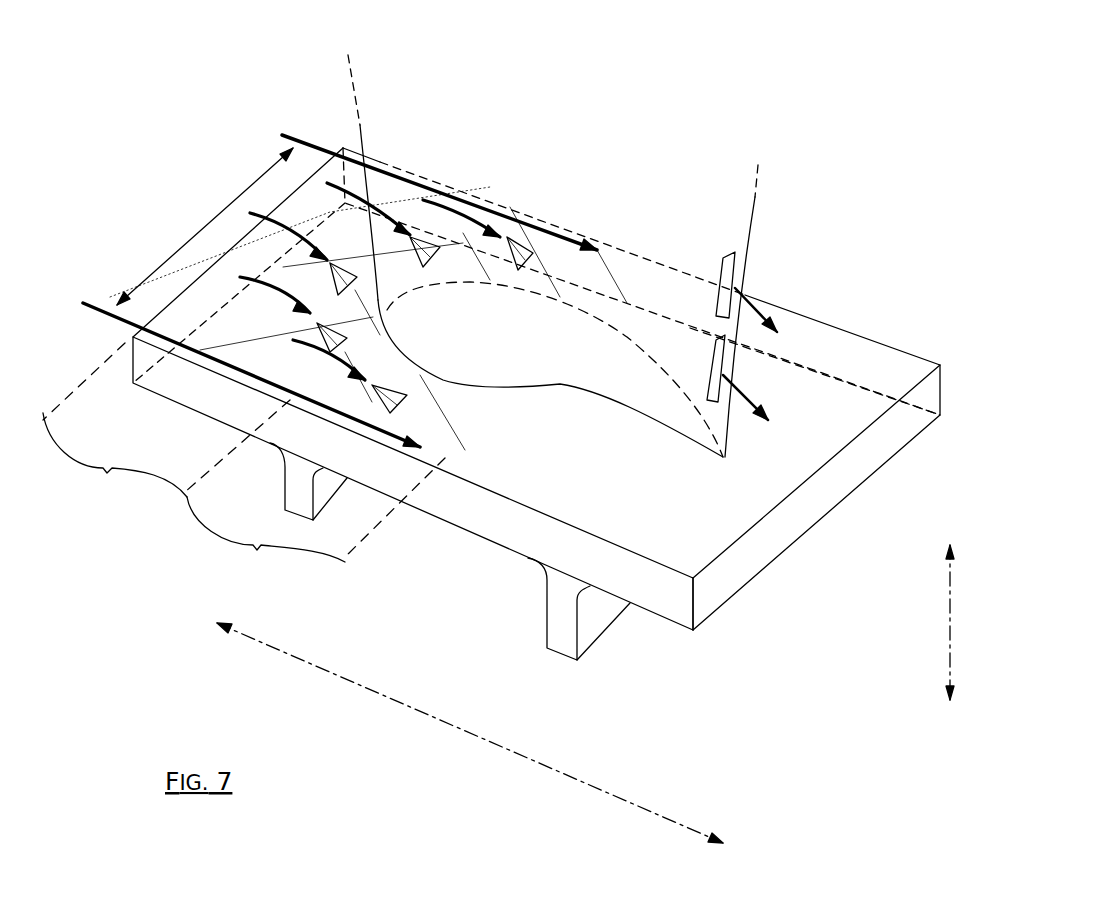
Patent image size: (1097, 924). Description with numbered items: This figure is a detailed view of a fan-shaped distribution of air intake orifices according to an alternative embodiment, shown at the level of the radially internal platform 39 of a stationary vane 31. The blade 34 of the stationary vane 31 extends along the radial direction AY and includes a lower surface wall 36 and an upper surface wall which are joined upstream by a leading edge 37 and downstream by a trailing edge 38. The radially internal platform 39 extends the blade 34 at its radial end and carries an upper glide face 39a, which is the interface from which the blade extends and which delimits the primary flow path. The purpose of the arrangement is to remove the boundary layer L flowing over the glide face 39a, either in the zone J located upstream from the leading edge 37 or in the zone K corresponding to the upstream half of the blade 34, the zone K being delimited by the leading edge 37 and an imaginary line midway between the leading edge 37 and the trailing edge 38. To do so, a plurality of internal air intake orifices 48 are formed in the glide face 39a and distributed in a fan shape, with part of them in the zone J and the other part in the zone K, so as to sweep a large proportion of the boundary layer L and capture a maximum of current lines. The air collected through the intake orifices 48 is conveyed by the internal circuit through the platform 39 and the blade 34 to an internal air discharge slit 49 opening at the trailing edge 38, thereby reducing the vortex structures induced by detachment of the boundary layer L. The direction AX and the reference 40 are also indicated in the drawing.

The stationary vane 31 is at (732, 106).
The blade 34 is at (442, 178).
The lower surface wall 36 is at (695, 436).
The leading edge 37 is at (353, 92).
The trailing edge 38 is at (757, 190).
The radially internal platform 39 is at (372, 446).
The upper glide face 39a is at (687, 545).
The downstream side of platform 40 is at (707, 413).
The internal air intake orifice 48 is at (410, 395).
The internal air discharge slit 49 is at (717, 378).
The boundary layer L is at (205, 226).
The zone upstream from the leading edge J is at (166, 432).
The zone corresponding to the upstream half of the blade K is at (316, 524).
The axial direction AX is at (675, 822).
The radial direction AY is at (950, 625).